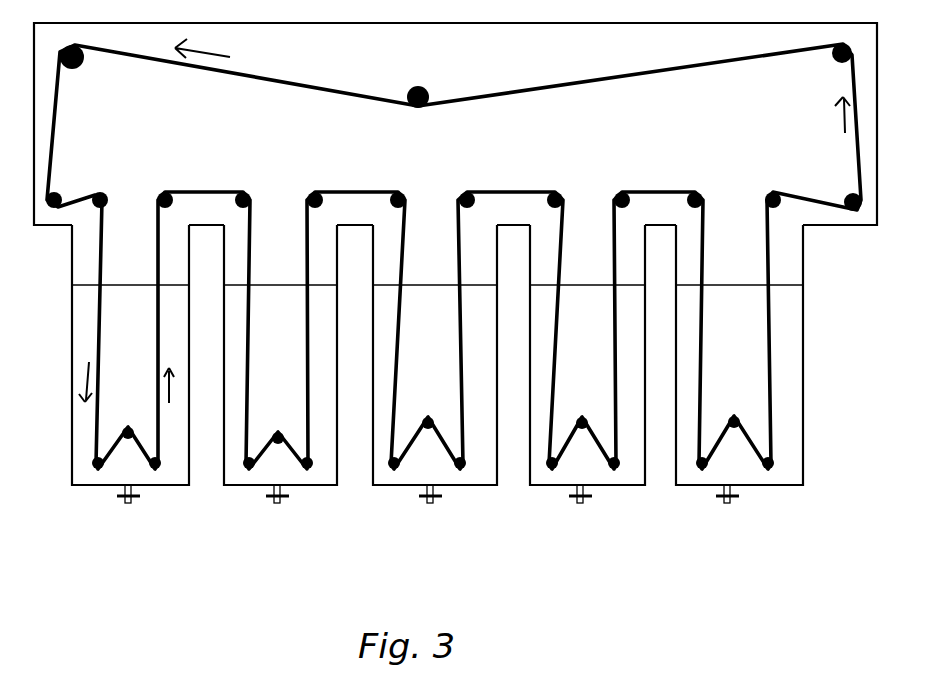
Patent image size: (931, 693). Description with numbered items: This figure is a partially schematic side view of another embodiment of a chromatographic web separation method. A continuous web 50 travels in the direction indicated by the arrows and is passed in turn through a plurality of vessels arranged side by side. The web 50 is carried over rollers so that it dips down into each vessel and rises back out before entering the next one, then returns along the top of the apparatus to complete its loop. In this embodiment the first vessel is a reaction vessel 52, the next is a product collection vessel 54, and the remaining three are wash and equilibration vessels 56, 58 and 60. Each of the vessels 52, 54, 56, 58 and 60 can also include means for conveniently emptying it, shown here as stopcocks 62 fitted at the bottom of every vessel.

The web 50 is at (323, 86).
The reaction vessel 52 is at (162, 485).
The product collection vessel 54 is at (307, 485).
The wash and equilibration vessel 56 is at (463, 485).
The wash and equilibration vessel 58 is at (618, 485).
The wash and equilibration vessel 60 is at (772, 485).
The stopcock 62 is at (120, 498).